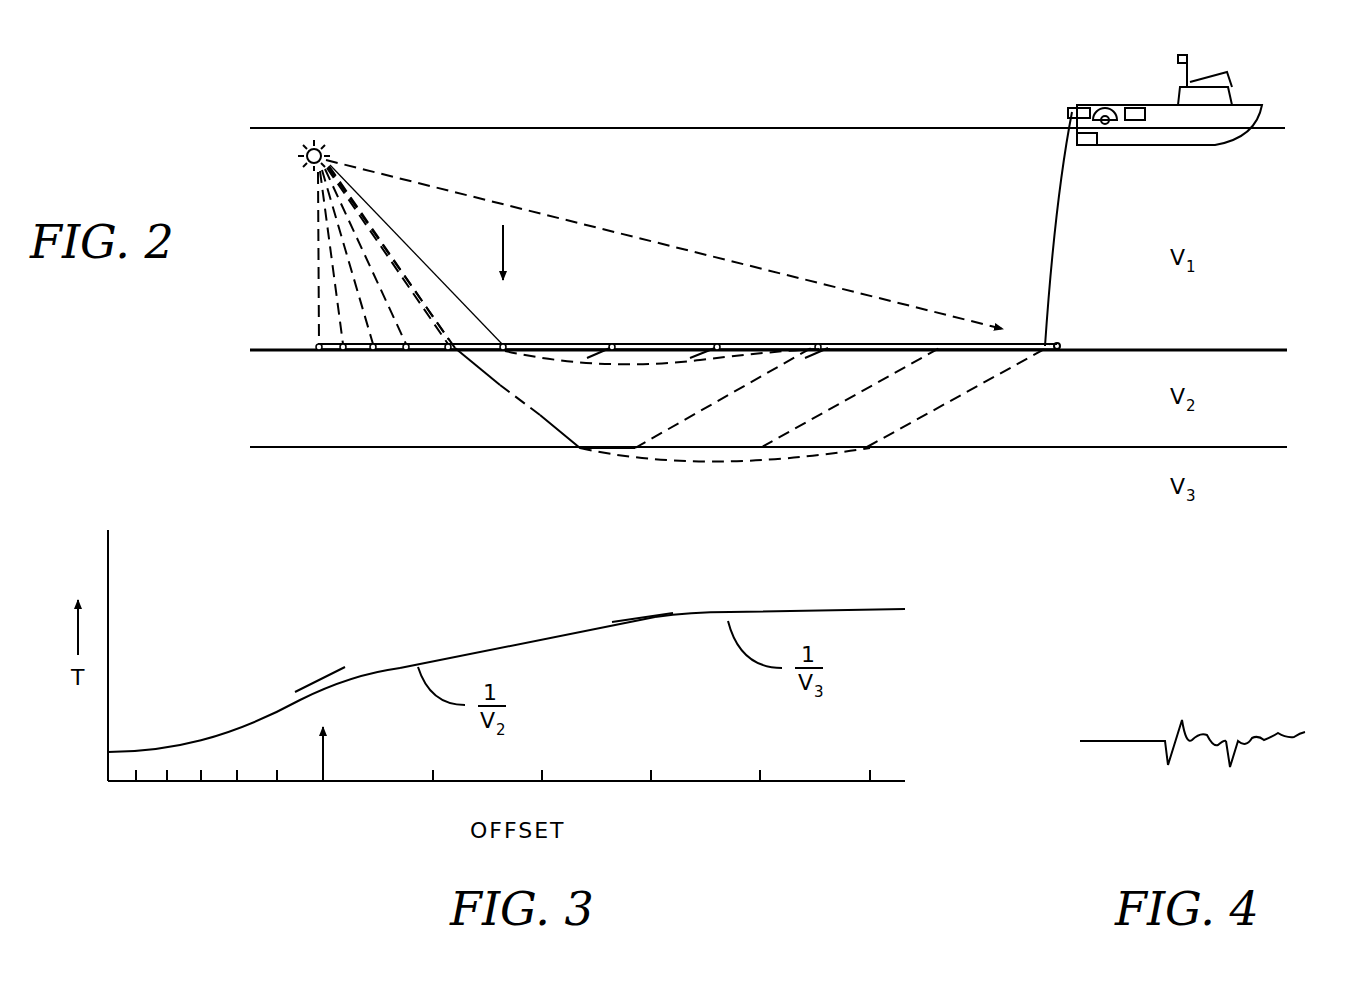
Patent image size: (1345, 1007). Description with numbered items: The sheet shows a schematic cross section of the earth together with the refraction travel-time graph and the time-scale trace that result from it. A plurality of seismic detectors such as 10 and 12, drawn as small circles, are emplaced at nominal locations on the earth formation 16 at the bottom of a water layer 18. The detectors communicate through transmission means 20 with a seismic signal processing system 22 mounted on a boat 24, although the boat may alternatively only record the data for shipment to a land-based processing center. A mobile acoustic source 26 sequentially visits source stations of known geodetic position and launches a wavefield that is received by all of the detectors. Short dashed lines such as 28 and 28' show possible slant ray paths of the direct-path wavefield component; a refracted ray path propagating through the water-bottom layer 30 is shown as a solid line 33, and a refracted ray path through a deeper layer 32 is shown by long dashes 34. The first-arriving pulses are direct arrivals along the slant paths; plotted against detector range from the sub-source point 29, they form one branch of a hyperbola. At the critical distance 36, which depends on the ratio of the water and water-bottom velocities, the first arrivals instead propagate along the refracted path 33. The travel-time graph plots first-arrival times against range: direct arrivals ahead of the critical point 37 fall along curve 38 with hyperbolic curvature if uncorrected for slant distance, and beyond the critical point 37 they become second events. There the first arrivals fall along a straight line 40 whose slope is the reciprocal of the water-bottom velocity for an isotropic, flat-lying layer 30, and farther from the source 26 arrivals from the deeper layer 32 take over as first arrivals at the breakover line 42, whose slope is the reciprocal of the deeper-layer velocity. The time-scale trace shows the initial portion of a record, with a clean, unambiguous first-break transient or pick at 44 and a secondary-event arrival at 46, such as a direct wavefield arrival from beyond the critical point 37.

In FIG. 2, the seismic detector 10 is at (504, 342).
In FIG. 2, the seismic detector 12 is at (613, 342).
In FIG. 2, the earth formation 16 is at (1199, 347).
In FIG. 2, the water layer 18 is at (1130, 240).
In FIG. 2, the transmission means 20 is at (1053, 222).
In FIG. 2, the seismic signal processing system 22 is at (1131, 107).
In FIG. 2, the boat 24 is at (1255, 105).
In FIG. 2, the mobile acoustic source 26 is at (303, 165).
In FIG. 2, the direct-path ray path 28 is at (350, 256).
In FIG. 2, the direct-path ray path 28' is at (408, 253).
In FIG. 2, the sub-source point 29 is at (296, 328).
In FIG. 2, the water-bottom layer 30 is at (1131, 409).
In FIG. 2, the deeper layer 32 is at (1132, 499).
In FIG. 2, the refracted ray path 33 is at (607, 362).
In FIG. 2, the refracted ray path 34 is at (718, 462).
In FIG. 2, the critical distance 36 is at (507, 250).
In FIG. 3, the critical point 37 is at (323, 781).
In FIG. 3, the direct-arrival curve 38 is at (222, 730).
In FIG. 3, the straight line 40 is at (490, 650).
In FIG. 3, the breakover line 42 is at (790, 611).
In FIG. 4, the first-break transient 44 is at (1165, 740).
In FIG. 4, the secondary-event arrival 46 is at (1229, 737).